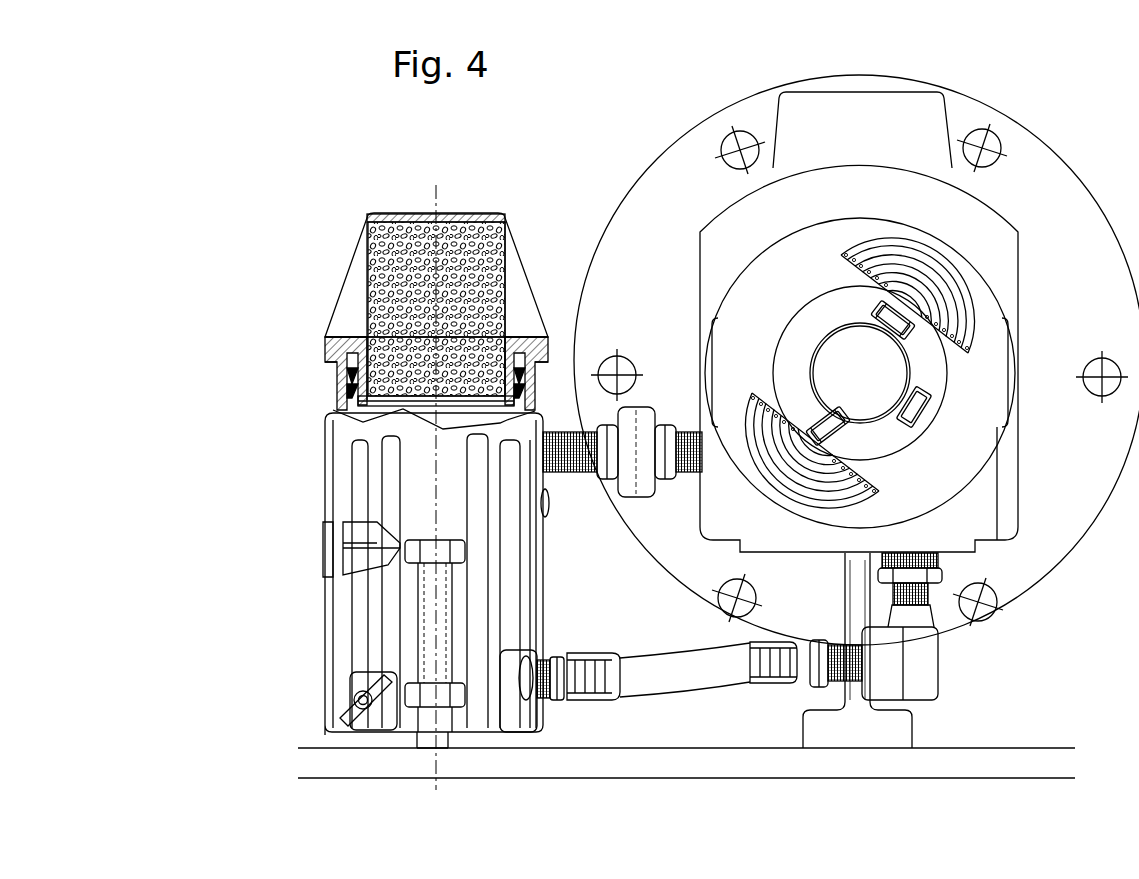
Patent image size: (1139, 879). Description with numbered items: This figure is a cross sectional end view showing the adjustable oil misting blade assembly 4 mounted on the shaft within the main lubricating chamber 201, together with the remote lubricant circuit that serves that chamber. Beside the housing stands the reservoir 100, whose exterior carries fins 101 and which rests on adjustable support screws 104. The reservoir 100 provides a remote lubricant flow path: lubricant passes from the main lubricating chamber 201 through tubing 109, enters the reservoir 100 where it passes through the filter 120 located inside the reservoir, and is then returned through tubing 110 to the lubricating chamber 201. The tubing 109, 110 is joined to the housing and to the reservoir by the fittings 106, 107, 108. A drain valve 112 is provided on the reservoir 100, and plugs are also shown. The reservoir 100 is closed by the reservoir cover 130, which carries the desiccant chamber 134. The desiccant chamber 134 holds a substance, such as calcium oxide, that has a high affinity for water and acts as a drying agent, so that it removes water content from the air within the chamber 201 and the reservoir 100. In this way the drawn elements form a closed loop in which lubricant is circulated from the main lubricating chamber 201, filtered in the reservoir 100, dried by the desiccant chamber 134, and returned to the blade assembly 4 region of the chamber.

The adjustable oil misting blade assembly 4 is at (992, 294).
The reservoir 100 is at (305, 386).
The fins 101 is at (345, 488).
The adjustable support screws 104 is at (442, 740).
The fitting 106 is at (820, 640).
The fitting 107 is at (556, 705).
The fitting 108 is at (640, 498).
The tubing 109 is at (571, 474).
The tubing 110 is at (691, 682).
The drain valve 112 is at (350, 700).
The filter 120 is at (356, 538).
The reservoir cover 130 is at (343, 346).
The desiccant chamber 134 is at (388, 260).
The main lubricating chamber 201 is at (763, 337).